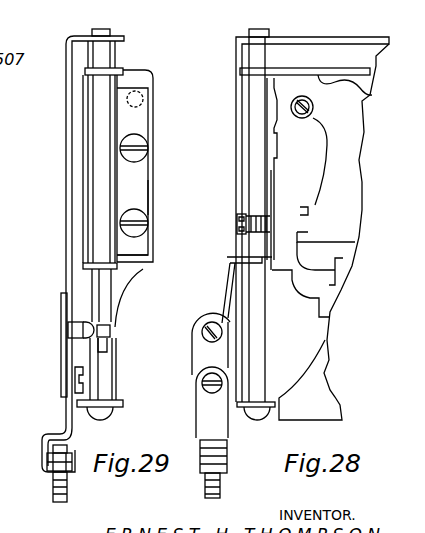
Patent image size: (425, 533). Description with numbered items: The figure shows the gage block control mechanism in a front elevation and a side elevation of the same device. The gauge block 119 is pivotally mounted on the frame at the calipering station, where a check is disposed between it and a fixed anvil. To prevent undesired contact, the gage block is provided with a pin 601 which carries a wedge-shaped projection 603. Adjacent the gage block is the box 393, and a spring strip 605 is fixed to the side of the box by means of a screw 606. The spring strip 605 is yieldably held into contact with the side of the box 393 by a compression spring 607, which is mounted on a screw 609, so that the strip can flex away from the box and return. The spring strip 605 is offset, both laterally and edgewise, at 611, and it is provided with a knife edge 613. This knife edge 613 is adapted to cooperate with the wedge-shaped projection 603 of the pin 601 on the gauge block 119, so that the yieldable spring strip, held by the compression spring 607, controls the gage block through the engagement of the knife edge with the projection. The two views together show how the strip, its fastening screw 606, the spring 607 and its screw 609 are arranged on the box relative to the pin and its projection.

In FIG. 29, the box 393 is at (136, 78).
In FIG. 28, the box 393 is at (312, 164).
In FIG. 29, the screw 606 is at (140, 160).
In FIG. 28, the screw 606 is at (265, 158).
In FIG. 29, the spring strip 605 is at (132, 197).
In FIG. 28, the spring strip 605 is at (265, 188).
In FIG. 29, the screw 609 is at (138, 233).
In FIG. 28, the screw 609 is at (238, 218).
In FIG. 28, the compression spring 607 is at (250, 246).
In FIG. 29, the offset 611 is at (136, 269).
In FIG. 28, the offset 611 is at (246, 270).
In FIG. 29, the knife edge 613 is at (103, 270).
In FIG. 28, the knife edge 613 is at (227, 268).
In FIG. 29, the pin 601 is at (68, 333).
In FIG. 28, the pin 601 is at (212, 432).
In FIG. 29, the wedge-shaped projection 603 is at (109, 334).
In FIG. 28, the wedge-shaped projection 603 is at (195, 347).
In FIG. 29, the gauge block 119 is at (65, 365).
In FIG. 28, the gauge block 119 is at (193, 375).